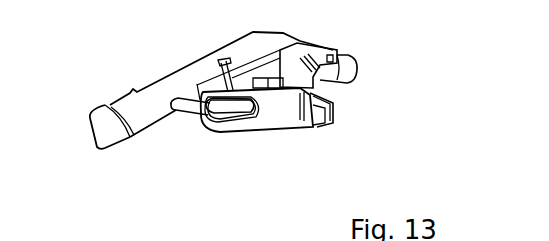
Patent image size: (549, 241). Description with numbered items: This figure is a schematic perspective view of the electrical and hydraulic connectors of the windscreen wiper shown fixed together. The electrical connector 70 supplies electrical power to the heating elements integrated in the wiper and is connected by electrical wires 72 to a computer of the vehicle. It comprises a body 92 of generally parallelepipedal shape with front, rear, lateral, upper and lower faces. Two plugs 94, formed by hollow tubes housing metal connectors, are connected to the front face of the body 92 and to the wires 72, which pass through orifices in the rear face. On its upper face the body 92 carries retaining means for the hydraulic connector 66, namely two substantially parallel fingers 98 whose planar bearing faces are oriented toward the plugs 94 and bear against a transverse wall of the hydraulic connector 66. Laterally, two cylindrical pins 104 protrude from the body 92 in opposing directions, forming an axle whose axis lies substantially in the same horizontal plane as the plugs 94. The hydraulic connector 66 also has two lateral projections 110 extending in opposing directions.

The hydraulic connector 66 is at (338, 40).
The projections 110 is at (330, 57).
The cylindrical pins 104 is at (333, 96).
The plugs 94 is at (330, 120).
The electrical wires 72 is at (183, 113).
The body 92 is at (262, 137).
The fingers 98 is at (281, 120).
The electrical connector 70 is at (310, 135).